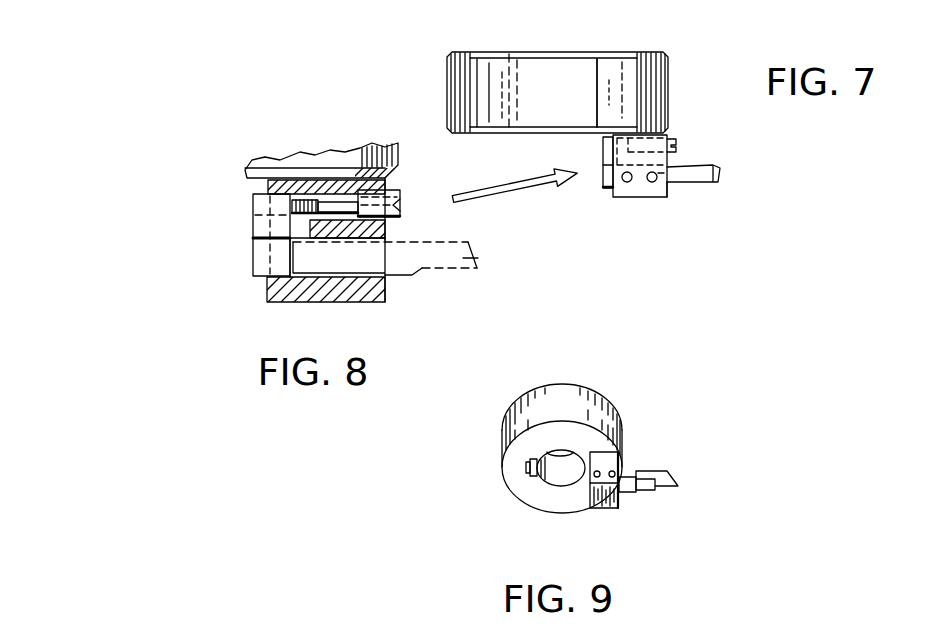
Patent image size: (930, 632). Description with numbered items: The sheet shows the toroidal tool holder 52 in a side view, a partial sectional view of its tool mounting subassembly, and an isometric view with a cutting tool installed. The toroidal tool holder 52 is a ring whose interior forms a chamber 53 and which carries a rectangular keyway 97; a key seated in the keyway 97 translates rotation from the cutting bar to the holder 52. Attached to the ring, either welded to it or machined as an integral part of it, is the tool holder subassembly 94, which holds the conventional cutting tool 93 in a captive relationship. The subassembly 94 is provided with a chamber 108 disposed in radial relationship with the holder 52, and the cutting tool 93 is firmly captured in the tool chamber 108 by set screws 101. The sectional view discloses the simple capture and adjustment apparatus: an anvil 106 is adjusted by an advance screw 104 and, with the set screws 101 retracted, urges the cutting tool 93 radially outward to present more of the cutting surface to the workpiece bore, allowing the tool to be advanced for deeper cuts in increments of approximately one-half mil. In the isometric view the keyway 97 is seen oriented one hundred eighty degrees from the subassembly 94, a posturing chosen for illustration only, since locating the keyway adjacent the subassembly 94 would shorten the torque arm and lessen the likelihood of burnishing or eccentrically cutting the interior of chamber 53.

In FIG. 7, the toroidal tool holder 52 is at (662, 90).
In FIG. 9, the toroidal tool holder 52 is at (570, 400).
In FIG. 7, the chamber 53 is at (597, 80).
In FIG. 9, the chamber 53 is at (560, 470).
In FIG. 7, the cutting tool 93 is at (720, 172).
In FIG. 8, the cutting tool 93 is at (483, 260).
In FIG. 9, the cutting tool 93 is at (678, 478).
In FIG. 7, the tool holder subassembly 94 is at (665, 197).
In FIG. 8, the tool holder subassembly 94 is at (345, 293).
In FIG. 9, the tool holder subassembly 94 is at (608, 508).
In FIG. 7, the keyway 97 is at (509, 62).
In FIG. 9, the keyway 97 is at (527, 468).
In FIG. 7, the set screws 101 is at (652, 188).
In FIG. 9, the set screws 101 is at (613, 470).
In FIG. 7, the advance screw 104 is at (676, 145).
In FIG. 8, the advance screw 104 is at (391, 190).
In FIG. 7, the anvil 106 is at (605, 188).
In FIG. 8, the anvil 106 is at (253, 252).
In FIG. 7, the chamber 108 is at (670, 190).
In FIG. 8, the chamber 108 is at (386, 240).